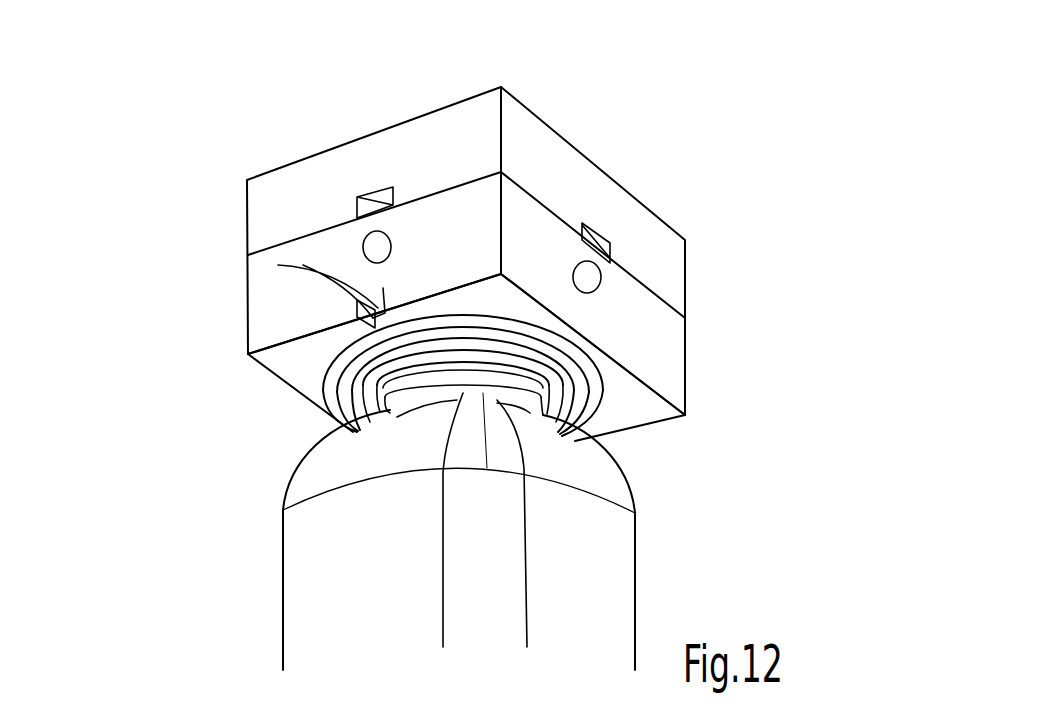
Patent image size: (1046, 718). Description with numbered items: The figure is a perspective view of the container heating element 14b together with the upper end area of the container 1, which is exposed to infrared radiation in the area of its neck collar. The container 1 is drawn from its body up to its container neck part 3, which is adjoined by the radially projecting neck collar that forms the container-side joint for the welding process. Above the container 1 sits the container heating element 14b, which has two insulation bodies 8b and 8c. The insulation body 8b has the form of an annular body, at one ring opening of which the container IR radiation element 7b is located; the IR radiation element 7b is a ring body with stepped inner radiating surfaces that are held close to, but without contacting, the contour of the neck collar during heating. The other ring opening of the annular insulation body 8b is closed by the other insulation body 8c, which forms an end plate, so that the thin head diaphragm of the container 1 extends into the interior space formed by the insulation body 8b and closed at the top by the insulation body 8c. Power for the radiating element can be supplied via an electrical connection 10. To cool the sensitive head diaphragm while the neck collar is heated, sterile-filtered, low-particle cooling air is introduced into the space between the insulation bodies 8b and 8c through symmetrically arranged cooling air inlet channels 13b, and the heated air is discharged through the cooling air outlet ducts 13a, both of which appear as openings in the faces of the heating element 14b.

The container 1 is at (600, 593).
The container neck part 3 is at (523, 390).
The container IR radiation element 7b is at (368, 392).
The insulation body 8b is at (660, 362).
The insulation body 8c is at (670, 278).
The electrical connection 10 is at (327, 282).
The cooling air outlet ducts 13a is at (386, 188).
The cooling air inlet channels 13b is at (373, 243).
The container heating element 14b is at (461, 225).